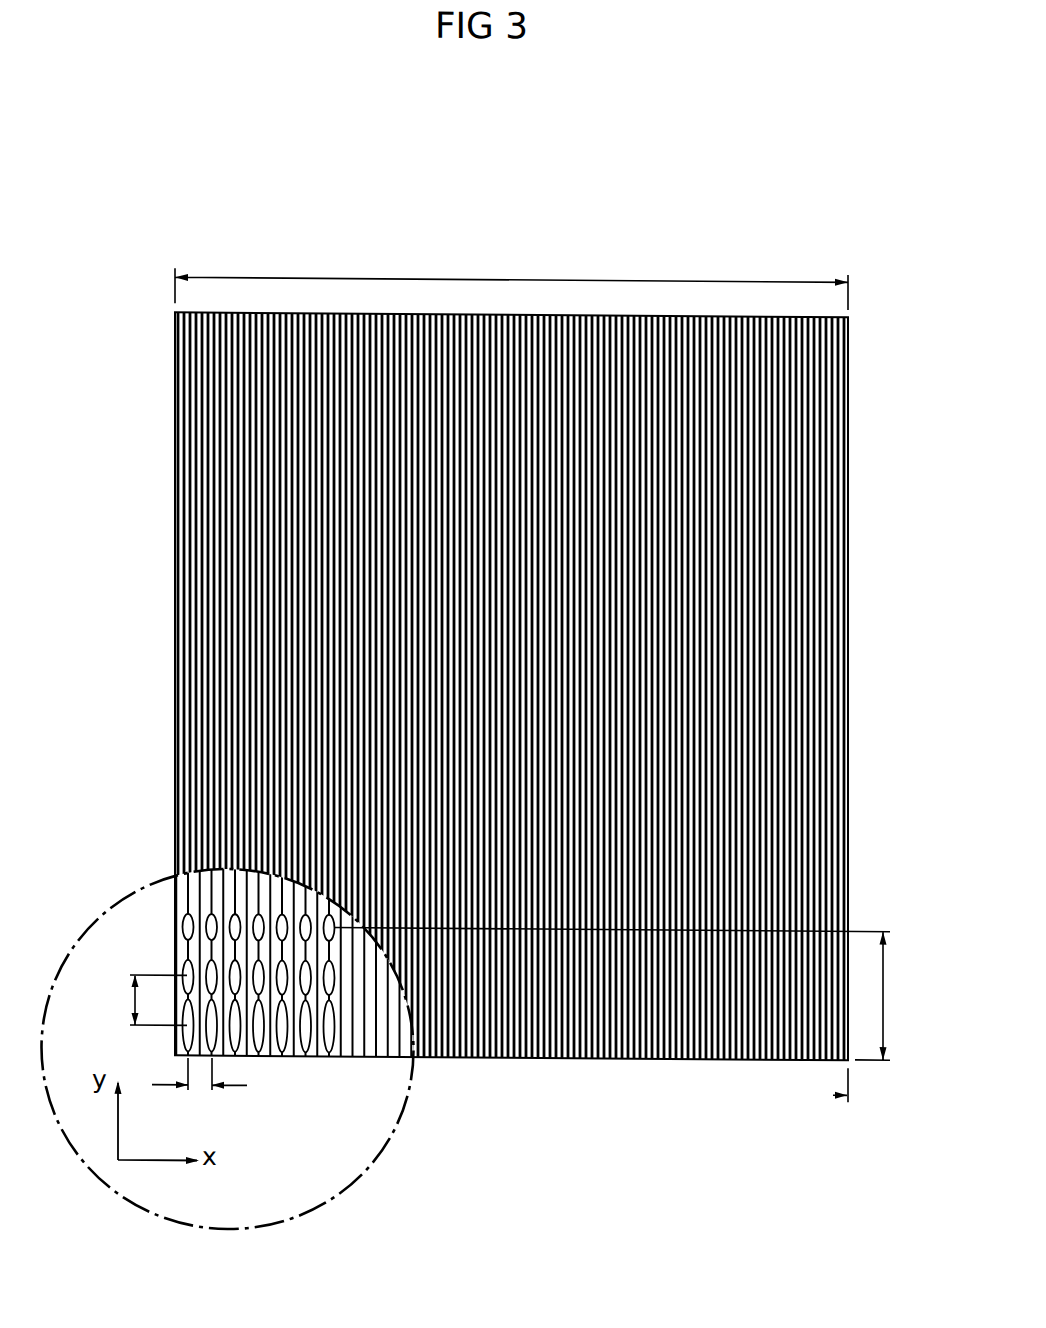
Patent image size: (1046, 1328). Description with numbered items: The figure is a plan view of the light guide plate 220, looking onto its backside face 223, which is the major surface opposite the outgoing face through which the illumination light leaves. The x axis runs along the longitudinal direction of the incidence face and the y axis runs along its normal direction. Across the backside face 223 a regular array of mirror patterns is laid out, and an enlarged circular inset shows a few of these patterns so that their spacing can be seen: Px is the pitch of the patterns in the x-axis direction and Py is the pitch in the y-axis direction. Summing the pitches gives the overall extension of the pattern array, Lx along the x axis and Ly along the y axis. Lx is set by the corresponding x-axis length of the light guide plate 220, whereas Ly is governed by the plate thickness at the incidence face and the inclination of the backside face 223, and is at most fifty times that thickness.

The light guide plate 220 is at (530, 179).
The backside face 223 is at (198, 480).
The x-axis extension range of the mirror patterns Lx is at (511, 275).
The y-axis extension range of the mirror patterns Ly is at (627, 994).
The pitch of the mirror patterns in the x-axis direction Px is at (199, 1092).
The pitch of the mirror patterns in the y-axis direction Py is at (141, 1000).